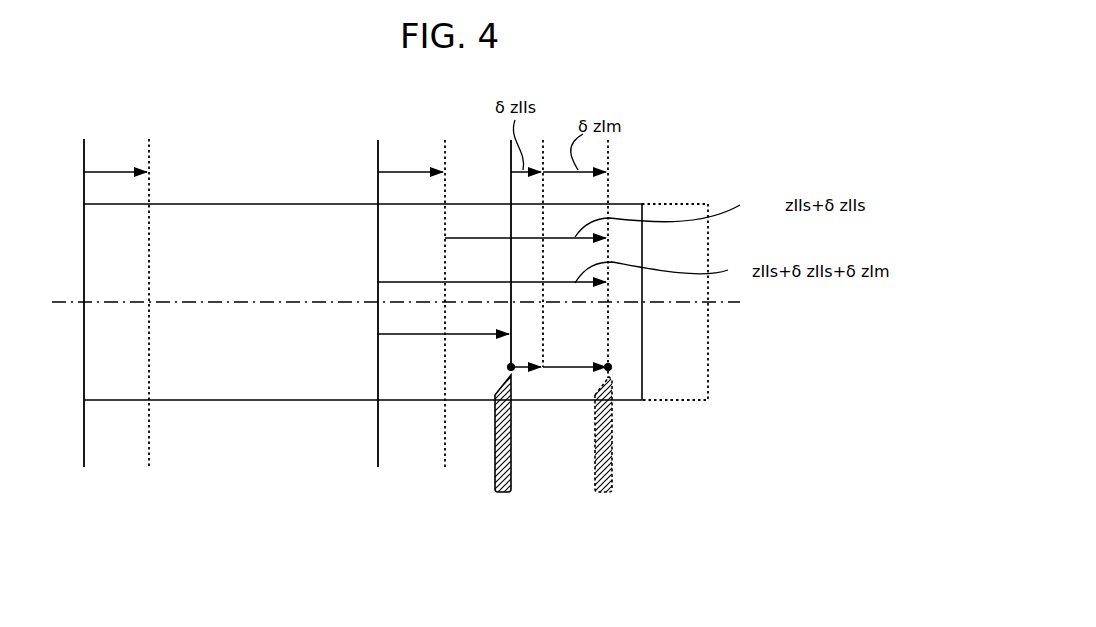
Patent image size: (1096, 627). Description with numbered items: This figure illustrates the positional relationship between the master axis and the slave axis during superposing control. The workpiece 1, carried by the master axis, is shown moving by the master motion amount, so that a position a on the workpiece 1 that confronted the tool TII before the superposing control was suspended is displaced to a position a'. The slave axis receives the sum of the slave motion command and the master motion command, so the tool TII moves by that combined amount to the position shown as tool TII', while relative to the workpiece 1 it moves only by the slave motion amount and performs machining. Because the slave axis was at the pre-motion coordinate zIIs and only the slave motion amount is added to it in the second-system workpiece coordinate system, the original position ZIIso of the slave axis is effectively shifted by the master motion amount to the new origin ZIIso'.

The workpiece 1 is at (258, 390).
The position on the workpiece a is at (533, 404).
The moved position a' is at (618, 417).
The tool TII is at (510, 465).
The tool after motion TII' is at (632, 466).
The original position of the ZIIs axis ZIIso is at (442, 333).
The coordinate position of the slave axis zIIs is at (425, 336).
The shifted original position of the ZIIs axis ZIIso' is at (512, 361).